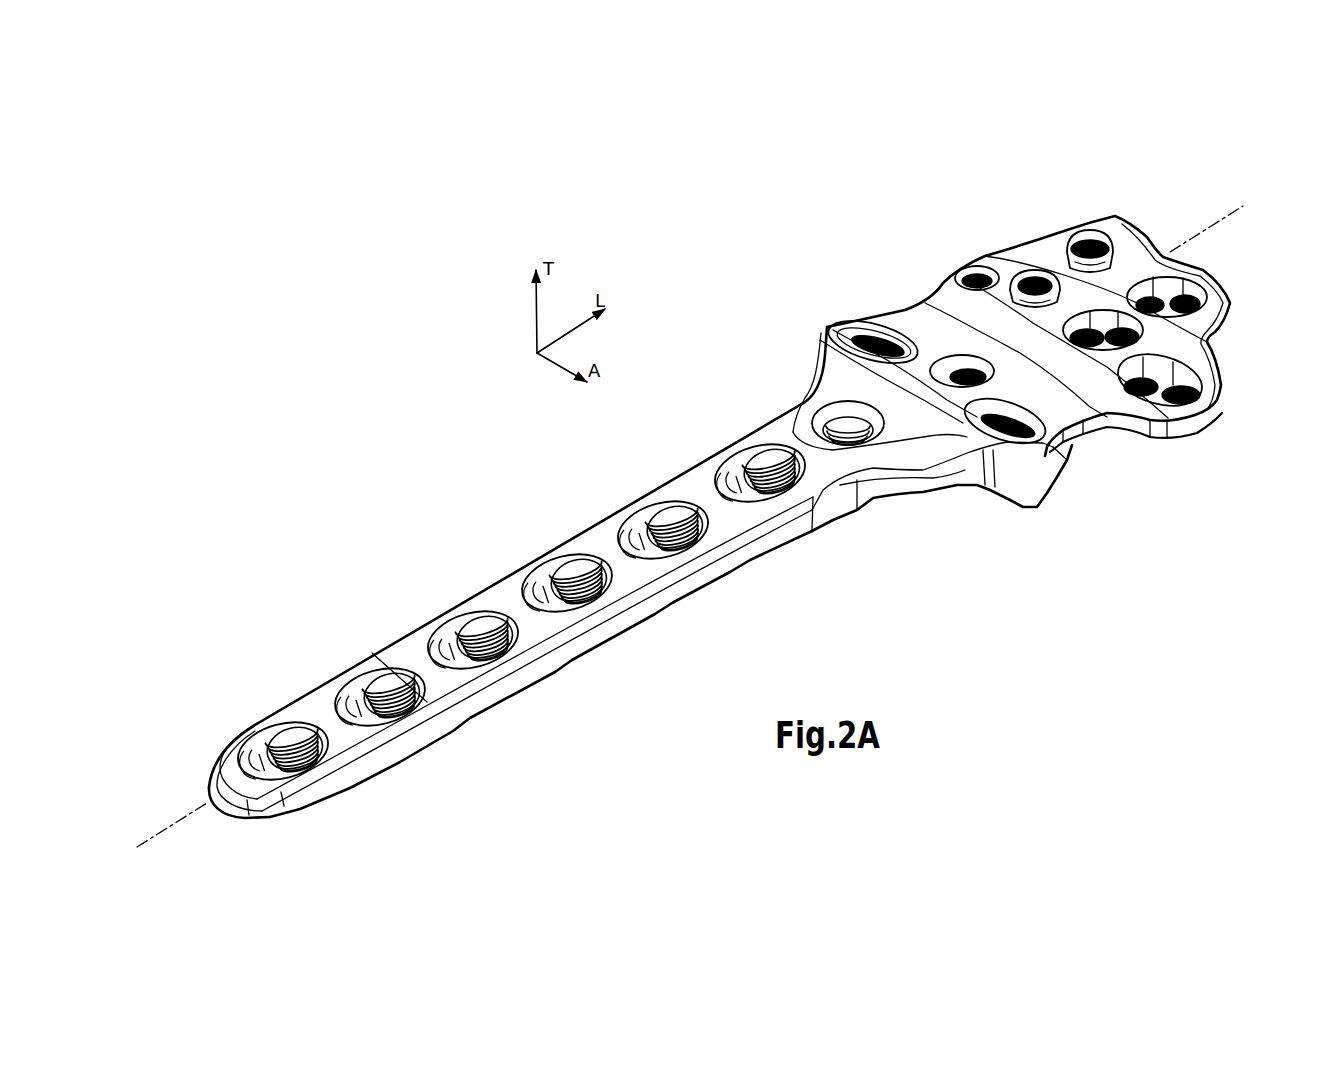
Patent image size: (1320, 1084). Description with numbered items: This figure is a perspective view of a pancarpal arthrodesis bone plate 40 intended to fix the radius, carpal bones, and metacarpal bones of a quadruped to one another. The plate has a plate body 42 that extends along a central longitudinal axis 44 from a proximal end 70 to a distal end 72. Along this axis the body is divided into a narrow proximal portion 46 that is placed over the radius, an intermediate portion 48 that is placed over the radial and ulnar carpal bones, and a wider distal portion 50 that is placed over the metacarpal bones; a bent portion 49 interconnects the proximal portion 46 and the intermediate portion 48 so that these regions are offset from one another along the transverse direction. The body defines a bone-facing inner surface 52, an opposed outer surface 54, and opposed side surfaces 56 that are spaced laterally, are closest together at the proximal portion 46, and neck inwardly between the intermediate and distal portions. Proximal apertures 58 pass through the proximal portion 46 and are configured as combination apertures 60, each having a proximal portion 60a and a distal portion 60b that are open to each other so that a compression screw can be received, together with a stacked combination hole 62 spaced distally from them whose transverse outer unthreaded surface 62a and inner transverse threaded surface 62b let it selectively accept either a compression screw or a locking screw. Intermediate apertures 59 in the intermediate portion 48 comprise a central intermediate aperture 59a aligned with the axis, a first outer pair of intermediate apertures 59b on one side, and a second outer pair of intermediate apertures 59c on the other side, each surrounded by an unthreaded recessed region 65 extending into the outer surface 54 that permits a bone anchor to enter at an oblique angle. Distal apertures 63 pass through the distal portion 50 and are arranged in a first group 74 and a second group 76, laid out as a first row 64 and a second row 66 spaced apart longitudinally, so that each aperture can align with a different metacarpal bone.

The pancarpal arthrodesis bone plate 40 is at (733, 337).
The plate body 42 is at (592, 520).
The central longitudinal axis 44 is at (1207, 226).
The proximal portion 46 is at (567, 665).
The intermediate portion 48 is at (1015, 465).
The bent portion 49 is at (917, 343).
The distal portion 50 is at (1205, 419).
The bone-facing inner surface 52 is at (718, 580).
The outer surface 54 is at (793, 432).
The side surfaces 56 is at (372, 652).
The proximal apertures 58 is at (481, 612).
The intermediate apertures 59 is at (860, 318).
The central intermediate aperture 59a is at (940, 358).
The first outer pair of intermediate apertures 59b is at (838, 322).
The second outer pair of intermediate apertures 59c is at (1043, 414).
The combination aperture 60 is at (272, 752).
The proximal portion of combination aperture 60a is at (287, 803).
The distal portion of combination aperture 60b is at (405, 770).
The stacked combination hole 62 is at (803, 412).
The transverse outer unthreaded surface 62a is at (820, 403).
The inner transverse threaded surface 62b is at (915, 360).
The distal apertures 63 is at (1212, 289).
The first row 64 is at (963, 262).
The recessed region 65 is at (848, 352).
The second row 66 is at (1062, 225).
The proximal end 70 is at (217, 810).
The distal end 72 is at (1127, 220).
The first group of distal apertures 74 is at (1187, 410).
The second group of distal apertures 76 is at (1205, 314).